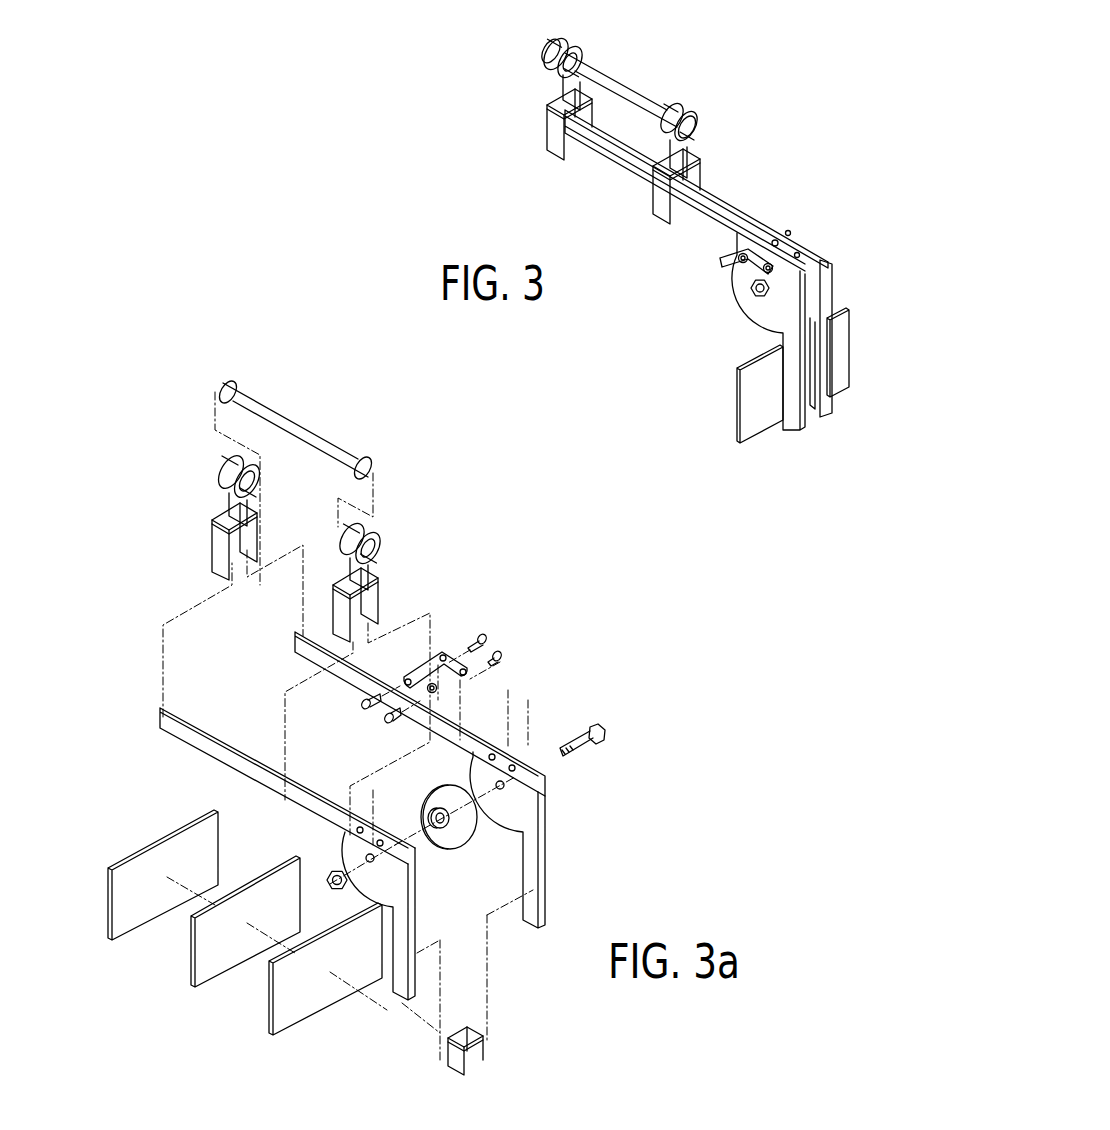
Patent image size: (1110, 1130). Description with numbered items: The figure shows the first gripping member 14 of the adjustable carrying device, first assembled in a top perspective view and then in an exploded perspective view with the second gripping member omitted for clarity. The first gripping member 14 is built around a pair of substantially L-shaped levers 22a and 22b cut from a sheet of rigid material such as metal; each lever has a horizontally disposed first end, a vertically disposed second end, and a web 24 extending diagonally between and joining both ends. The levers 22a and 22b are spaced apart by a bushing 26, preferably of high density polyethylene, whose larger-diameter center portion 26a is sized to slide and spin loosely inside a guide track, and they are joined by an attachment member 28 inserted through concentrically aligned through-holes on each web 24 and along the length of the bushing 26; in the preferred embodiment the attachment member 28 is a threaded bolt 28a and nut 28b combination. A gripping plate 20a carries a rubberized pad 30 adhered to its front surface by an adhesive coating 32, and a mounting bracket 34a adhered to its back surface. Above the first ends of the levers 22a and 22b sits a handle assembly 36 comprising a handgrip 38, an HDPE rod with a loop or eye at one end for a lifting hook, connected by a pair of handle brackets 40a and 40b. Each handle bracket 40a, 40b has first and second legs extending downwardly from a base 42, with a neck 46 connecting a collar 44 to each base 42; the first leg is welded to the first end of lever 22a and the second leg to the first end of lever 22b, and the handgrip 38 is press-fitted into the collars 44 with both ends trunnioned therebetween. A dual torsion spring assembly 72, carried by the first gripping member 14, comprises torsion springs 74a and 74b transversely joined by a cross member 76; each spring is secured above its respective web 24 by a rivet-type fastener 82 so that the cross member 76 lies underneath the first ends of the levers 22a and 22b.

In FIG. 3, the first gripping member 14 is at (760, 208).
In FIG. 3, the handle assembly 36 is at (636, 70).
In FIG. 3a, the handgrip 38 is at (300, 410).
In FIG. 3, the collar 44 is at (580, 46).
In FIG. 3a, the collar 44 is at (368, 536).
In FIG. 3, the neck 46 is at (693, 138).
In FIG. 3a, the neck 46 is at (228, 494).
In FIG. 3, the base 42 is at (558, 93).
In FIG. 3a, the base 42 is at (380, 576).
In FIG. 3, the handle bracket 40a is at (556, 157).
In FIG. 3, the handle bracket 40b is at (662, 216).
In FIG. 3, the dual torsion spring assembly 72 is at (718, 261).
In FIG. 3, the torsion spring 74a is at (752, 270).
In FIG. 3a, the torsion spring 74b is at (470, 677).
In FIG. 3a, the cross member 76 is at (412, 677).
In FIG. 3, the attachment member 28 is at (754, 306).
In FIG. 3a, the bolt 28a is at (603, 727).
In FIG. 3a, the nut 28b is at (337, 870).
In FIG. 3, the gripping plate 20a is at (760, 433).
In FIG. 3a, the gripping plate 20a is at (277, 1033).
In FIG. 3a, the lever 22a is at (170, 725).
In FIG. 3a, the lever 22b is at (297, 650).
In FIG. 3a, the web 24 is at (510, 815).
In FIG. 3a, the bushing 26 is at (432, 817).
In FIG. 3a, the center portion 26a is at (472, 840).
In FIG. 3a, the rubberized pad 30 is at (113, 938).
In FIG. 3a, the adhesive coating 32 is at (195, 985).
In FIG. 3a, the mounting bracket 34a is at (483, 1057).
In FIG. 3a, the rivet-type fastener 82 is at (485, 647).